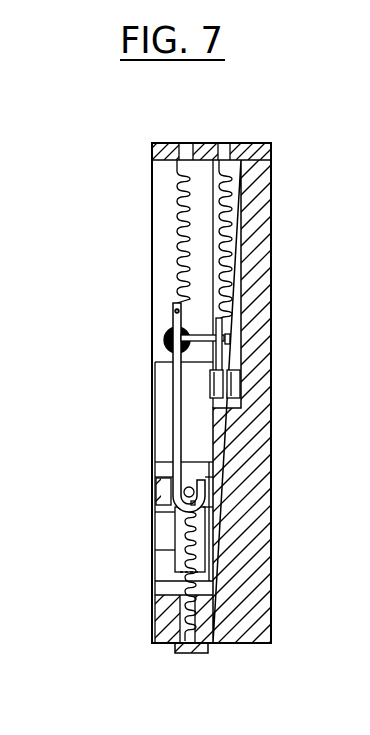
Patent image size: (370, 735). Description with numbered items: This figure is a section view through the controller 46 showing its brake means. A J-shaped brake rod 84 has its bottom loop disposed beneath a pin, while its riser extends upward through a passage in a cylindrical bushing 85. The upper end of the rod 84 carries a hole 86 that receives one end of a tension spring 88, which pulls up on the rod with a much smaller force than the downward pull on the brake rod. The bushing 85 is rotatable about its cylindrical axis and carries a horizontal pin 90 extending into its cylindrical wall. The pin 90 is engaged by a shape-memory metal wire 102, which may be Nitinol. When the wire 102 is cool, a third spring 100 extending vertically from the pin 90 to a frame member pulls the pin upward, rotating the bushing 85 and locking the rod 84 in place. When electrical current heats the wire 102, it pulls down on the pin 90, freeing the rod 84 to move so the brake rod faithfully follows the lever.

The latch assembly 46 is at (238, 75).
The J-shaped brake rod 84 is at (181, 443).
The cylindrical bushing 85 is at (167, 334).
The hole 86 is at (177, 313).
The spring 88 is at (185, 229).
The horizontal pin 90 is at (212, 334).
The third spring 100 is at (220, 258).
The shape-memory metal wire 102 is at (222, 357).